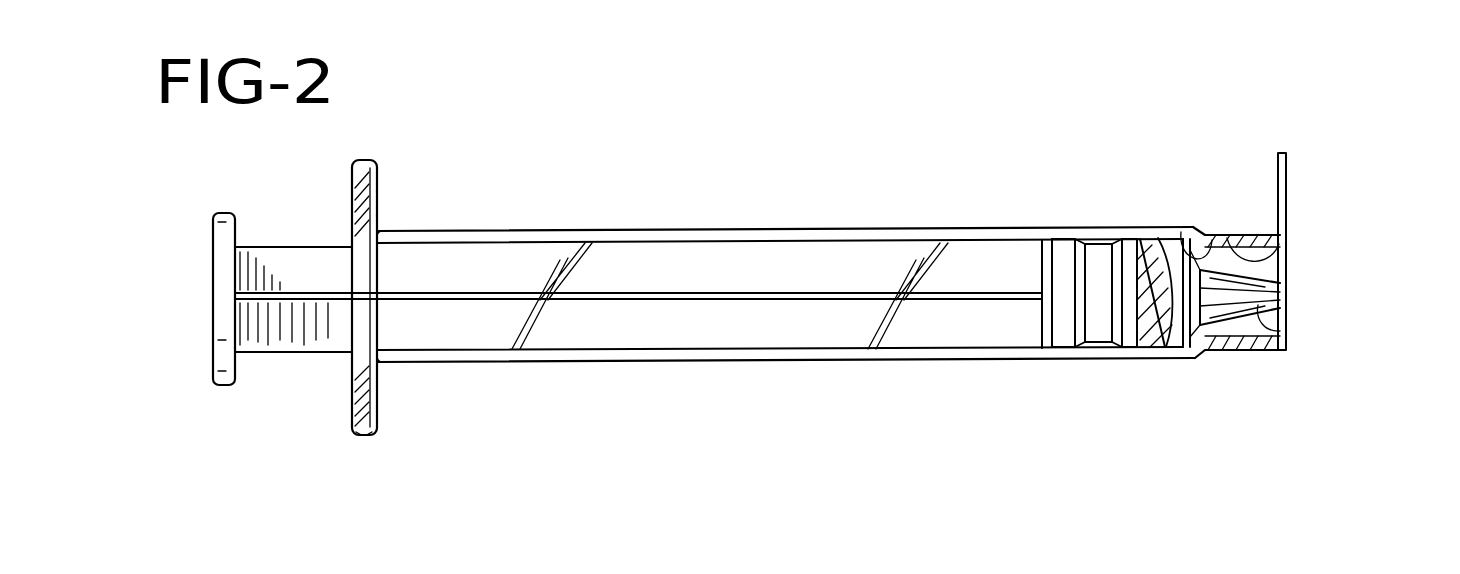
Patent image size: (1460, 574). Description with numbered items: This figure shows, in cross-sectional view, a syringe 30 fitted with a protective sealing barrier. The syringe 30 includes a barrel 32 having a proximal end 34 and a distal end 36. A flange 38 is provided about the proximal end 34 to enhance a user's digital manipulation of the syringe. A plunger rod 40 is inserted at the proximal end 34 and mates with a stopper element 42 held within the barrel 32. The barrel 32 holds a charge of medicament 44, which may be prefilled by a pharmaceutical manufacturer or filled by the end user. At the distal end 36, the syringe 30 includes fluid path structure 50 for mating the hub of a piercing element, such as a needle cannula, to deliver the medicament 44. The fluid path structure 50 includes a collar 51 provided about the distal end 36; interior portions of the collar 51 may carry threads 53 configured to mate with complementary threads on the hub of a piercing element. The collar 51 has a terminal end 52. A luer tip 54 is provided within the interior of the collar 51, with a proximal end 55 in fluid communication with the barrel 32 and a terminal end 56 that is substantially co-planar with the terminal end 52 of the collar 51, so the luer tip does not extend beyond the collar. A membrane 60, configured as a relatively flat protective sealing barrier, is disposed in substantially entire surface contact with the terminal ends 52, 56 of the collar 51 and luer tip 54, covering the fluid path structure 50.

The syringe 30 is at (662, 372).
The barrel 32 is at (532, 237).
The proximal end 34 is at (390, 230).
The distal end 36 is at (1197, 230).
The flange 38 is at (365, 430).
The plunger rod 40 is at (262, 340).
The stopper element 42 is at (1094, 320).
The charge of medicament 44 is at (1158, 238).
The fluid path structure 50 is at (1212, 385).
The collar 51 is at (1243, 352).
The terminal end 52 is at (1277, 227).
The threads 53 is at (1297, 245).
The luer tip 54 is at (1290, 333).
The proximal end 55 is at (1181, 232).
The terminal end 56 is at (1282, 303).
The membrane 60 is at (1312, 282).